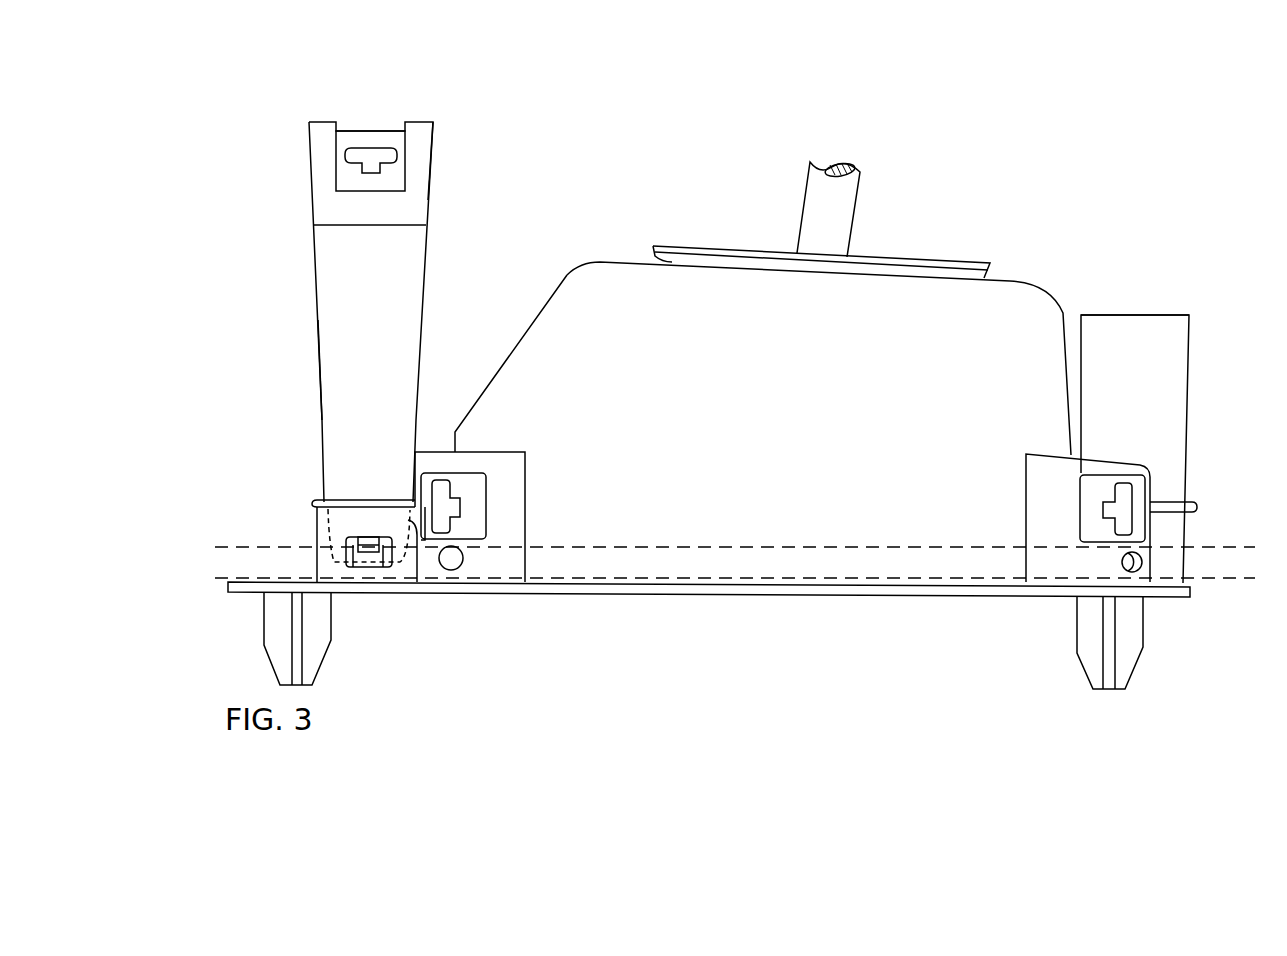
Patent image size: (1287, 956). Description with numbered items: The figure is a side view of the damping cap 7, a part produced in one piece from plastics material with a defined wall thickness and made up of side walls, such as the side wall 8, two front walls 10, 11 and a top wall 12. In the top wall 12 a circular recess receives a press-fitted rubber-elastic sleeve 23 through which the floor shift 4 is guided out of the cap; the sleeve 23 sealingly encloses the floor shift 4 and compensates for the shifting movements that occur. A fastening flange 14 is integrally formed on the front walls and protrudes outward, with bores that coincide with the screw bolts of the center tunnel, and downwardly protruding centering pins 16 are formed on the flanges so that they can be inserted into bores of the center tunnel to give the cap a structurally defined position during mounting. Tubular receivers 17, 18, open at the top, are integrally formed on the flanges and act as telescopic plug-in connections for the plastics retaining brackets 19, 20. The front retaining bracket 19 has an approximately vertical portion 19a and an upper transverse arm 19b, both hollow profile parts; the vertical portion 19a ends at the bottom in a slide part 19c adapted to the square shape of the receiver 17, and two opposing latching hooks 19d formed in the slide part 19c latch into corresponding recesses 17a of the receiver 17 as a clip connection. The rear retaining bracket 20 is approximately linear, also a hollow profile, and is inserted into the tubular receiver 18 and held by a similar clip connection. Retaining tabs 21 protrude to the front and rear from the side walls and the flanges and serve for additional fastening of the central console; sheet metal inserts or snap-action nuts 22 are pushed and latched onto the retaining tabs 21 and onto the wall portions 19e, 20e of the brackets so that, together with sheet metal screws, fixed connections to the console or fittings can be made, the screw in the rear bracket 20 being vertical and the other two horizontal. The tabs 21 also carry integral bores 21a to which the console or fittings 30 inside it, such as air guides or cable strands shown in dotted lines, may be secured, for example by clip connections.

The floor shift 4 is at (805, 205).
The damping cap 7 is at (1043, 262).
The side wall 8 is at (776, 428).
The front wall 10 is at (540, 312).
The front wall 11 is at (1063, 313).
The top wall 12 is at (638, 262).
The fastening flange 14 is at (1184, 594).
The centering pin 16 is at (326, 642).
The tubular receiver 17 is at (317, 527).
The recess 17a is at (357, 566).
The tubular receiver 18 is at (1184, 561).
The front retaining bracket 19 is at (305, 299).
The vertical portion 19a is at (320, 398).
The upper transverse arm 19b is at (430, 200).
The slide part 19c is at (332, 539).
The latching hook 19d is at (368, 553).
The wall portion 19e is at (373, 131).
The rear retaining bracket 20 is at (1193, 403).
The wall portion 20e is at (1162, 315).
The retaining tab 21 is at (435, 452).
The bore 21a is at (452, 561).
The snap-action nut 22 is at (479, 509).
The rubber-elastic sleeve 23 is at (928, 262).
The fittings 30 is at (230, 570).